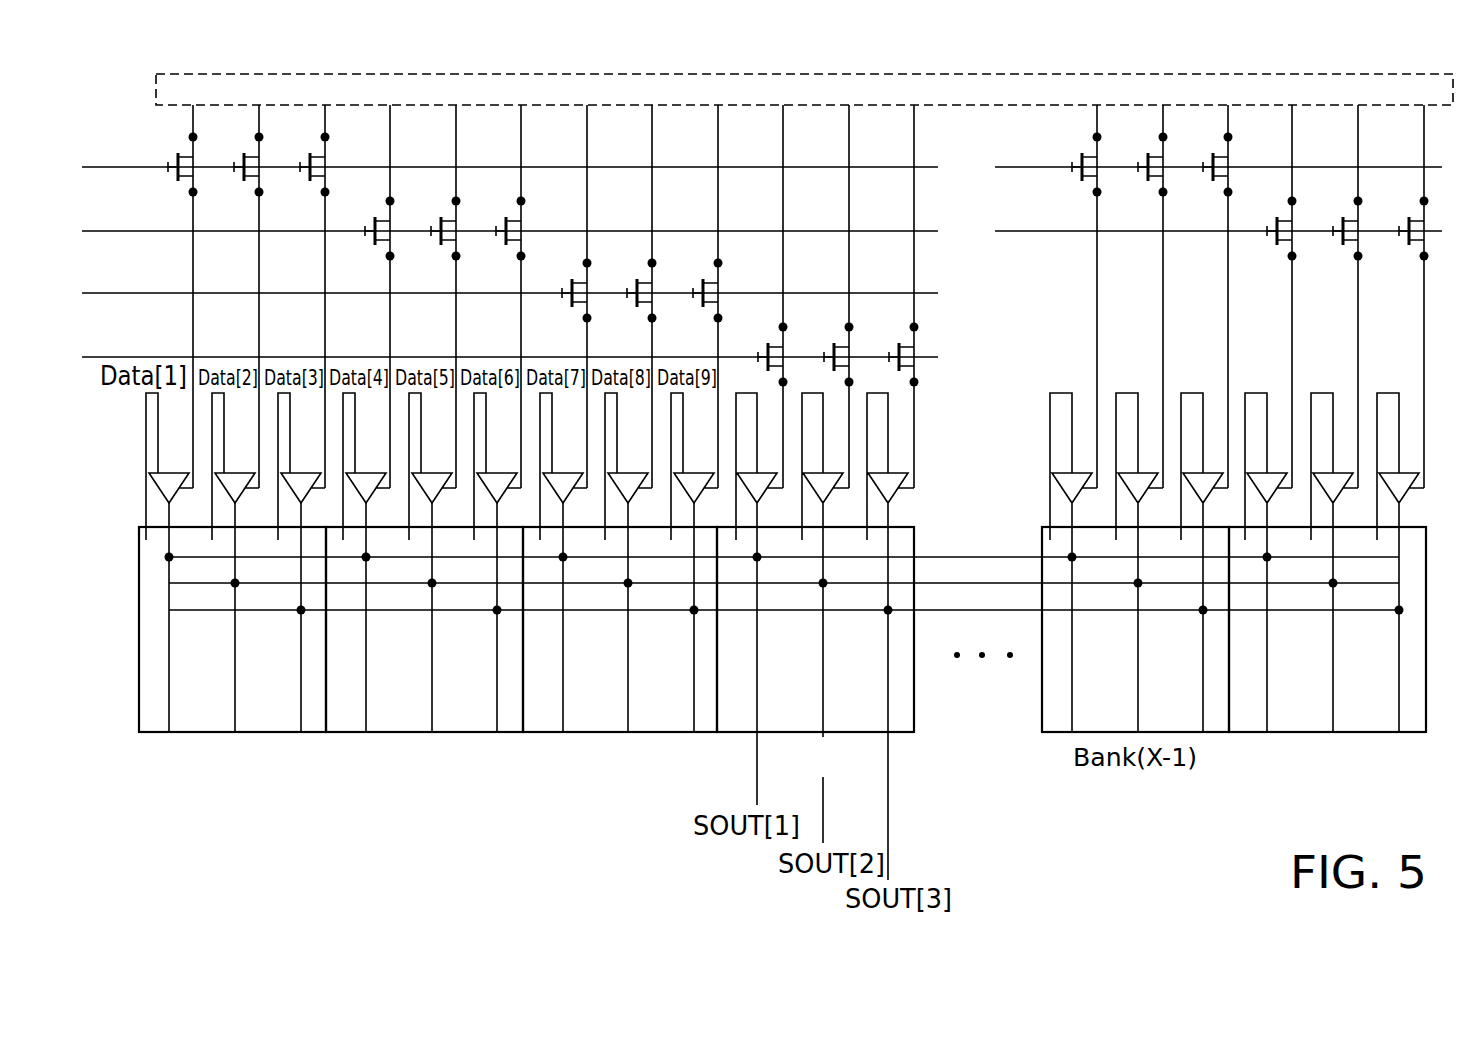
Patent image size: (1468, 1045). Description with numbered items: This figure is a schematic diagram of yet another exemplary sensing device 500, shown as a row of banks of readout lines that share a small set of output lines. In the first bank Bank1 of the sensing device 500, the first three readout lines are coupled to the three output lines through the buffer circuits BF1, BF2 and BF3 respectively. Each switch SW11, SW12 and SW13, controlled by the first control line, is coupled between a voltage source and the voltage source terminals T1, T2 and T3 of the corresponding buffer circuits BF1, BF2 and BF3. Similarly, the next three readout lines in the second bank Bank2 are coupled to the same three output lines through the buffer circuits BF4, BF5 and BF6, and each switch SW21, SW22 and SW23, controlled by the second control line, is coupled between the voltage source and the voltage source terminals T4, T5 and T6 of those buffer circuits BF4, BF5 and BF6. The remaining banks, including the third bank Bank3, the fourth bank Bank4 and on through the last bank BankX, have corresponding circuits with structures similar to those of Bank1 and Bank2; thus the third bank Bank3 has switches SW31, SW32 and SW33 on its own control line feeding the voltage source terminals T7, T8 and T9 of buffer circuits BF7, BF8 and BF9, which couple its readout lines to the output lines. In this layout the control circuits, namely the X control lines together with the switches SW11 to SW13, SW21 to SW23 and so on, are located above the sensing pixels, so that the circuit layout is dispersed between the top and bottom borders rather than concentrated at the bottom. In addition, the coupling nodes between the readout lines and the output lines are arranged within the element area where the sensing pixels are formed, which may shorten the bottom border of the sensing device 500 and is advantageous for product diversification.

The sensing device 500 is at (142, 65).
The switch SW11 is at (195, 166).
The switch SW12 is at (261, 166).
The switch SW13 is at (327, 166).
The switch SW21 is at (392, 230).
The switch SW22 is at (458, 230).
The switch SW23 is at (523, 230).
The switch SW31 is at (589, 292).
The switch SW32 is at (654, 292).
The switch SW33 is at (720, 292).
The buffer circuit BF1 is at (169, 466).
The buffer circuit BF2 is at (235, 466).
The buffer circuit BF3 is at (301, 466).
The buffer circuit BF4 is at (366, 466).
The buffer circuit BF5 is at (432, 466).
The buffer circuit BF6 is at (497, 466).
The buffer circuit BF7 is at (563, 466).
The buffer circuit BF8 is at (628, 466).
The buffer circuit BF9 is at (694, 466).
The voltage source terminal T1 is at (182, 491).
The voltage source terminal T2 is at (248, 491).
The voltage source terminal T3 is at (314, 491).
The voltage source terminal T4 is at (379, 491).
The voltage source terminal T5 is at (445, 491).
The voltage source terminal T6 is at (510, 491).
The voltage source terminal T7 is at (576, 491).
The voltage source terminal T8 is at (641, 491).
The voltage source terminal T9 is at (707, 491).
The bank Bank1 is at (232, 650).
The bank Bank2 is at (424, 650).
The bank Bank3 is at (620, 650).
The bank Bank4 is at (815, 650).
The bank BankX is at (1327, 650).